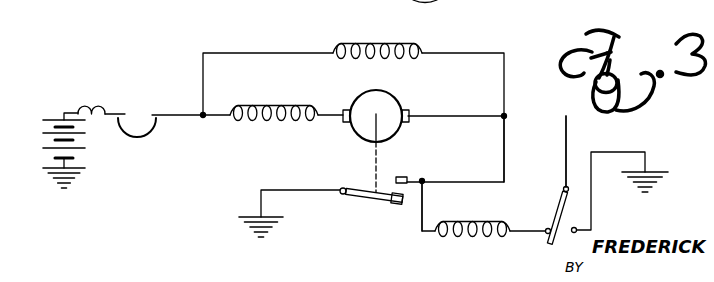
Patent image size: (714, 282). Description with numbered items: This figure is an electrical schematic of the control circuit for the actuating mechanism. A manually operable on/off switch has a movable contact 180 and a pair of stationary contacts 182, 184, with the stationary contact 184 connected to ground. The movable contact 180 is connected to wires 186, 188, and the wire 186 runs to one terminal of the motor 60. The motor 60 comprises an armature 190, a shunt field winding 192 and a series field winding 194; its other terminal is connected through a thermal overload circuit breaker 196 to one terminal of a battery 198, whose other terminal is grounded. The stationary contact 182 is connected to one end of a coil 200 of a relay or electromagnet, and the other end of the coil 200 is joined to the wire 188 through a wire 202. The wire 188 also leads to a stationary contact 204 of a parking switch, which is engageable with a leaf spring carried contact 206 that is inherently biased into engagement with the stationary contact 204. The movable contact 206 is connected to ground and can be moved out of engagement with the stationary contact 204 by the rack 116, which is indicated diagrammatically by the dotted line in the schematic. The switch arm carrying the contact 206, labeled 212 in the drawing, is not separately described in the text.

The battery 198 is at (50, 117).
The thermal overload circuit breaker 196 is at (152, 131).
The series field winding 194 is at (254, 105).
The shunt field winding 192 is at (399, 45).
The armature 190 is at (368, 100).
The motor 60 is at (392, 105).
The rack 116 is at (374, 172).
The switch arm 212 is at (385, 199).
The leaf spring carried contact 206 is at (396, 186).
The stationary contact 204 is at (409, 176).
The wire 202 is at (421, 218).
The coil 200 is at (490, 240).
The wire 188 is at (503, 136).
The wire 186 is at (565, 146).
The stationary contact 182 is at (548, 222).
The movable contact 180 is at (536, 249).
The stationary contact 184 is at (578, 230).